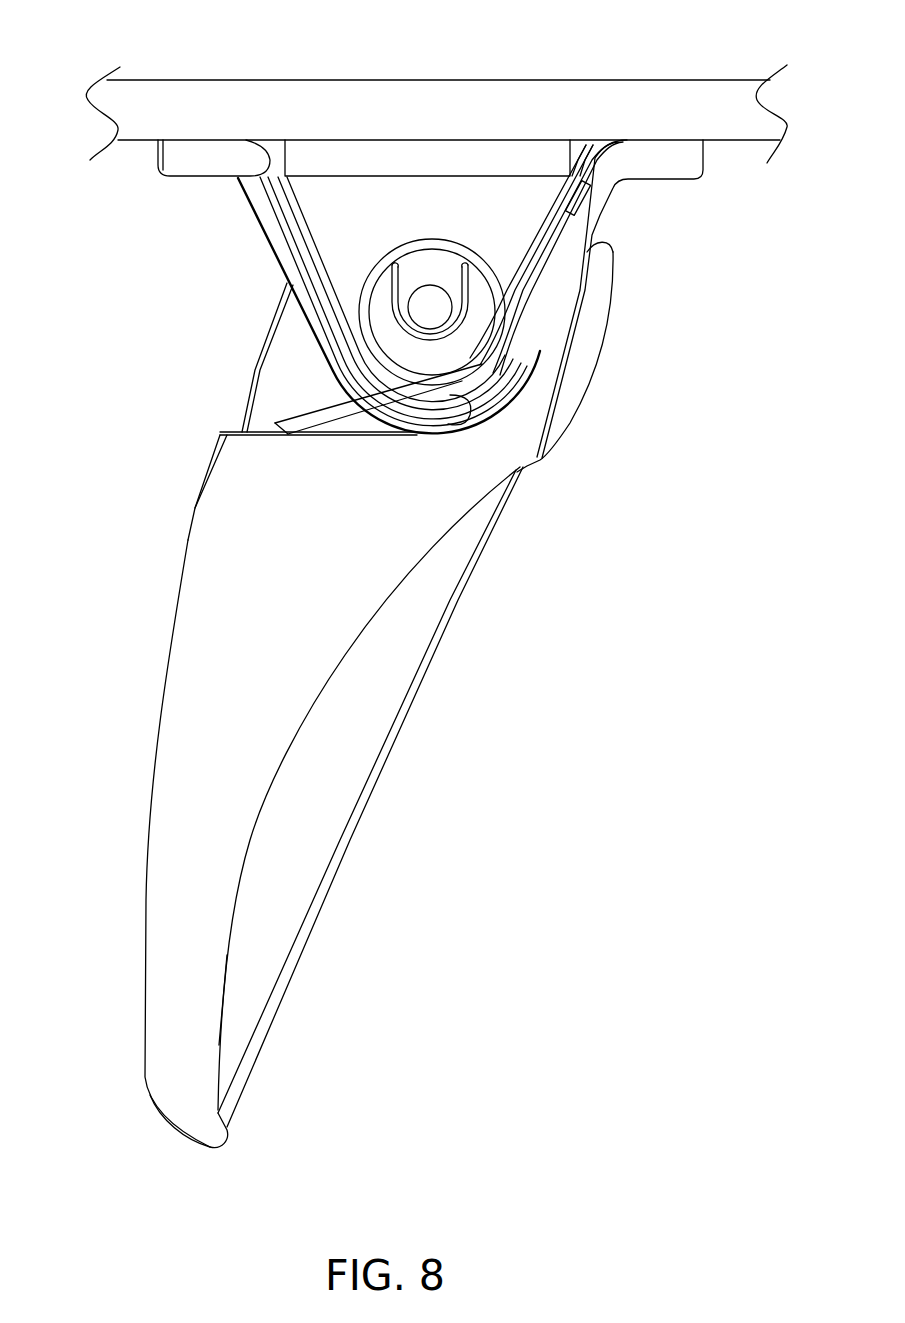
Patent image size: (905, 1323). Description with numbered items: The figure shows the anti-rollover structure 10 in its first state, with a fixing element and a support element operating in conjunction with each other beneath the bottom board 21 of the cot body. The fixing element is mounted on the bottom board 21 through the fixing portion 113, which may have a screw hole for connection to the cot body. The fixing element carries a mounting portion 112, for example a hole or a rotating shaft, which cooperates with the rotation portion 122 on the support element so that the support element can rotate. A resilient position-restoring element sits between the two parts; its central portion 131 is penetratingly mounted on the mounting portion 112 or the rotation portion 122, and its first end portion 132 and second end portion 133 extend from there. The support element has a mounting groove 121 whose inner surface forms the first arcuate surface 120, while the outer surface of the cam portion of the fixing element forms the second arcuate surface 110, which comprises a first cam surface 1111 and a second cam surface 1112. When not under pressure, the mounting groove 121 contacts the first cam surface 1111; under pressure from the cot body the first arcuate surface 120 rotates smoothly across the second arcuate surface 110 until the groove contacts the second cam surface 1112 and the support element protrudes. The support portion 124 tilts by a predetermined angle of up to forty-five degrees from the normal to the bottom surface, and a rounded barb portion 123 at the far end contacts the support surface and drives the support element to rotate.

The anti-rollover structure 10 is at (56, 48).
The bottom board 21 is at (626, 97).
The second arcuate surface 110 is at (450, 653).
The mounting portion 112 is at (452, 347).
The fixing portion 113 is at (670, 158).
The first arcuate surface 120 is at (327, 782).
The mounting groove 121 is at (253, 417).
The rotation portion 122 is at (420, 277).
The barb portion 123 is at (208, 1128).
The support portion 124 is at (372, 790).
The central portion 131 is at (420, 248).
The first end portion 132 is at (562, 215).
The second end portion 133 is at (308, 413).
The first cam surface 1111 is at (517, 393).
The second cam surface 1112 is at (357, 318).